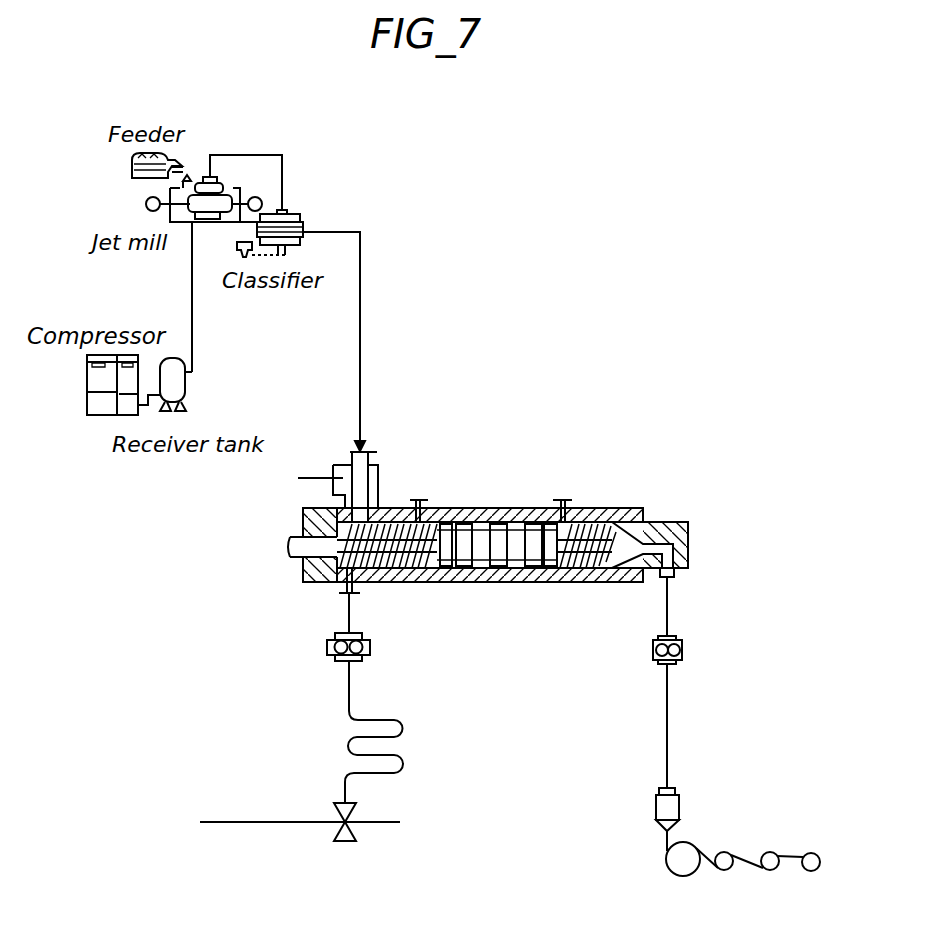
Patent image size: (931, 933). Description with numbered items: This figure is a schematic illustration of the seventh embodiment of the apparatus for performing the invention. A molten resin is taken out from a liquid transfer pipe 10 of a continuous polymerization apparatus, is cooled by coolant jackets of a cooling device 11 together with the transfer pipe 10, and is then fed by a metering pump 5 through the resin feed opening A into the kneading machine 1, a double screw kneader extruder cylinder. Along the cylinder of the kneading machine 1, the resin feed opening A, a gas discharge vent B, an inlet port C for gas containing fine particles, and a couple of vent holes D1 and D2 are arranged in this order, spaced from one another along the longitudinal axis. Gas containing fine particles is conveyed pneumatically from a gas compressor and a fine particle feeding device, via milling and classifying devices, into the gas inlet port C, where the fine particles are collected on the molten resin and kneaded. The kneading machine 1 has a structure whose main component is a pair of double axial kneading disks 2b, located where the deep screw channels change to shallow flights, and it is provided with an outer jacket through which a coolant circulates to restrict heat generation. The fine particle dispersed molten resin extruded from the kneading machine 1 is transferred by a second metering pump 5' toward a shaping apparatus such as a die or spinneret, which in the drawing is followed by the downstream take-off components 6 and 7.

The kneading machine 1 is at (492, 511).
The kneading disks 2b is at (462, 558).
The metering pump 5 is at (322, 648).
The metering pump 5' is at (687, 620).
The die / nozzle 6 is at (656, 808).
The take-up roll 7 is at (811, 856).
The liquid transfer pipe 10 is at (248, 820).
The cooling device 11 is at (376, 720).
The resin feed opening A is at (355, 600).
The gas discharge vent B is at (320, 465).
The gas inlet port C is at (357, 471).
The vent hole D1 is at (425, 497).
The vent hole D2 is at (570, 497).